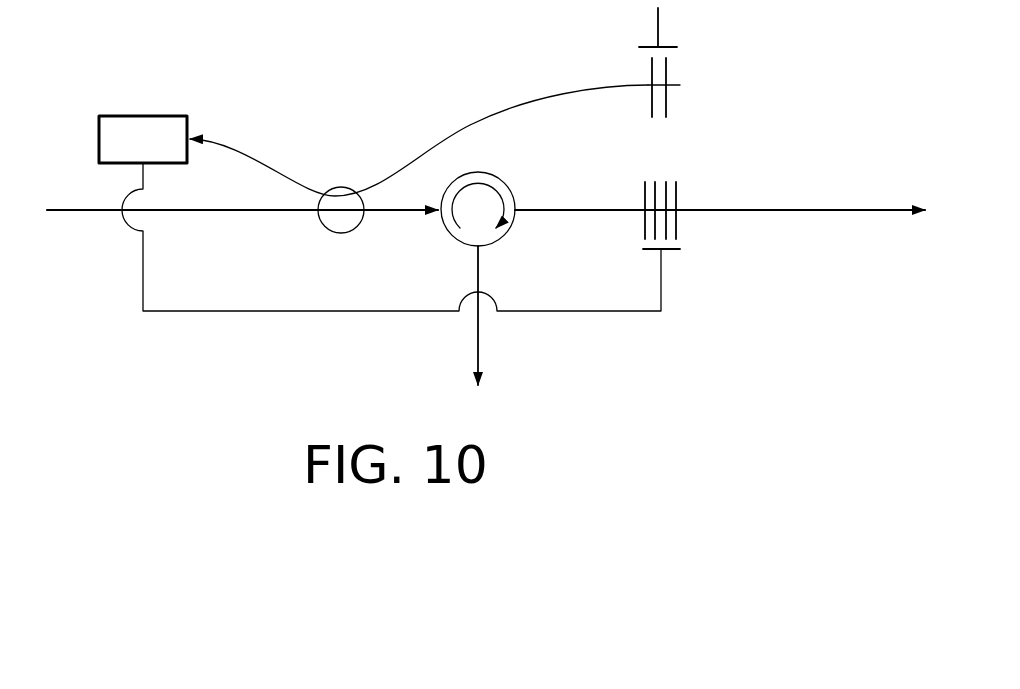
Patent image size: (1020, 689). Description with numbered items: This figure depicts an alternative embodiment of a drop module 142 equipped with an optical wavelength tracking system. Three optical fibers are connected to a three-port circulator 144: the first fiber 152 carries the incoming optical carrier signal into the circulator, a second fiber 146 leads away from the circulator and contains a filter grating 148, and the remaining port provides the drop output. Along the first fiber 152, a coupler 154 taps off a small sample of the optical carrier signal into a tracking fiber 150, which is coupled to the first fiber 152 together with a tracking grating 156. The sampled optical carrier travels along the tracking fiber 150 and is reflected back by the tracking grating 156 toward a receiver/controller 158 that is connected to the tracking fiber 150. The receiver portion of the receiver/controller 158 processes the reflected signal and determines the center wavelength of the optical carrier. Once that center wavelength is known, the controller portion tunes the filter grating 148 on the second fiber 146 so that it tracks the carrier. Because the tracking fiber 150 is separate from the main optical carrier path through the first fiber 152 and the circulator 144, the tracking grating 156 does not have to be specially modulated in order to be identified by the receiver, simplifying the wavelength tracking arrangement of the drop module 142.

The drop module 142 is at (800, 48).
The three-port circulator 144 is at (504, 236).
The second fiber 146 is at (805, 208).
The filter grating 148 is at (660, 178).
The tracking fiber 150 is at (468, 128).
The first fiber 152 is at (72, 215).
The coupler 154 is at (338, 233).
The tracking grating 156 is at (660, 118).
The receiver/controller 158 is at (380, 213).